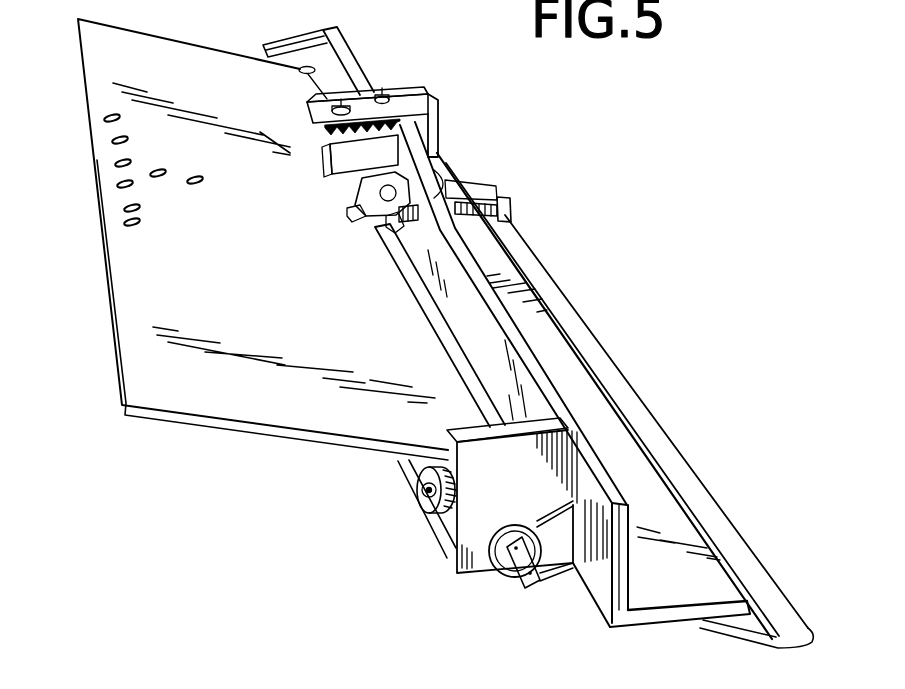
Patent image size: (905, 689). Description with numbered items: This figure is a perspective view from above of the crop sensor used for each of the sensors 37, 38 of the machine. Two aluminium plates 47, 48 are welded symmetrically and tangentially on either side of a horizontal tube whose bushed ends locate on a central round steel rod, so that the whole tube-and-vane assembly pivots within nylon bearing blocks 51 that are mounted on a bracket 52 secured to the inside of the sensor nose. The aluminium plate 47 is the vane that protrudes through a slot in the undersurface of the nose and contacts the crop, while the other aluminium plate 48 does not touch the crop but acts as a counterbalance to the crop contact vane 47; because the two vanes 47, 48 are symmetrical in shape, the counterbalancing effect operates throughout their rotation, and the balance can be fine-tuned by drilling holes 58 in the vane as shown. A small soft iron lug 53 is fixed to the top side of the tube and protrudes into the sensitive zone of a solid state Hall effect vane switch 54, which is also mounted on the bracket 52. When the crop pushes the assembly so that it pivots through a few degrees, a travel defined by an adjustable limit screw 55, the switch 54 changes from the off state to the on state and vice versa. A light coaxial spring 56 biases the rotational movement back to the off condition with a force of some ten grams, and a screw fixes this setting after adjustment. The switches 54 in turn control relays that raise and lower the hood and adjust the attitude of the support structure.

The sensor 37 is at (600, 243).
The sensor 38 is at (625, 400).
The aluminium plate 47 is at (750, 637).
The aluminium plate 48 is at (185, 418).
The nylon bearing blocks 51 is at (462, 528).
The bracket 52 is at (660, 618).
The soft iron lug 53 is at (412, 168).
The Hall effect vane switch 54 is at (406, 144).
The adjustable limit screw 55 is at (512, 212).
The coaxial spring 56 is at (488, 580).
The holes 58 is at (115, 157).